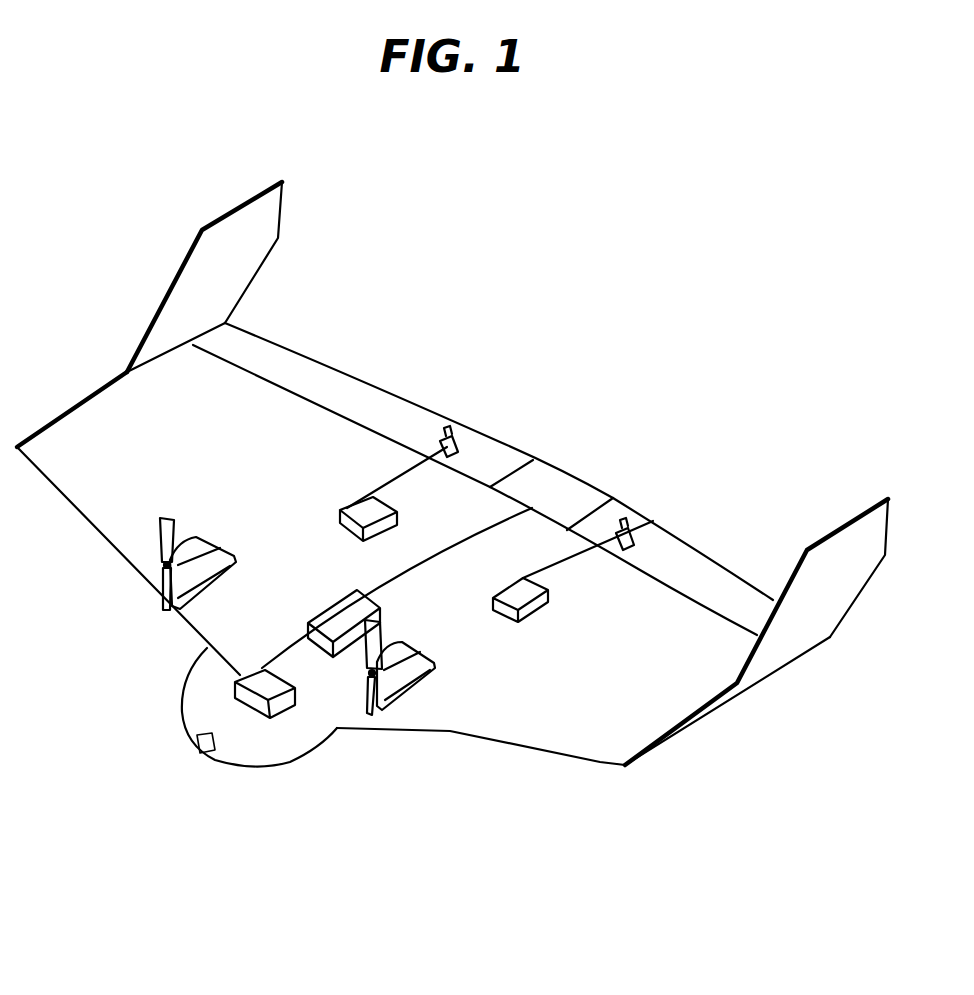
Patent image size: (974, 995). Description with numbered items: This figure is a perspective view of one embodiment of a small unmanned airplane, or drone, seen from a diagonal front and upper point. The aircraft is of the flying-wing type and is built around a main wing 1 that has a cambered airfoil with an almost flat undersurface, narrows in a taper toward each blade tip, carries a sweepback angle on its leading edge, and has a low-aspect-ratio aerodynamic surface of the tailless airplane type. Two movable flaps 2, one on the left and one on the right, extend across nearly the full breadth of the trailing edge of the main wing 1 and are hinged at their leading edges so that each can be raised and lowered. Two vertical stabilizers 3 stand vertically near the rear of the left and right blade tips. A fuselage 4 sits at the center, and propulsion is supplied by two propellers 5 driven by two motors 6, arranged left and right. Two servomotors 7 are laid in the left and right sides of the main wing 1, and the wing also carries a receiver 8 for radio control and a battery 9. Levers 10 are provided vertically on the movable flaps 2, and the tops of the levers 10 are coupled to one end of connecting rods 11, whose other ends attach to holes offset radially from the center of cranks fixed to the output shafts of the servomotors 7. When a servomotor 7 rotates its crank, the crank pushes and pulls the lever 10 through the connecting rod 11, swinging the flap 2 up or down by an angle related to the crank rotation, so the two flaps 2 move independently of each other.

The main wing 1 is at (513, 755).
The movable flap 2 is at (378, 385).
The vertical stabilizer 3 is at (282, 208).
The fuselage 4 is at (275, 748).
The propeller 5 is at (163, 545).
The motor 6 is at (197, 536).
The servomotor 7 is at (350, 536).
The receiver 8 is at (382, 605).
The battery 9 is at (232, 702).
The lever 10 is at (462, 436).
The connecting rod 11 is at (387, 480).